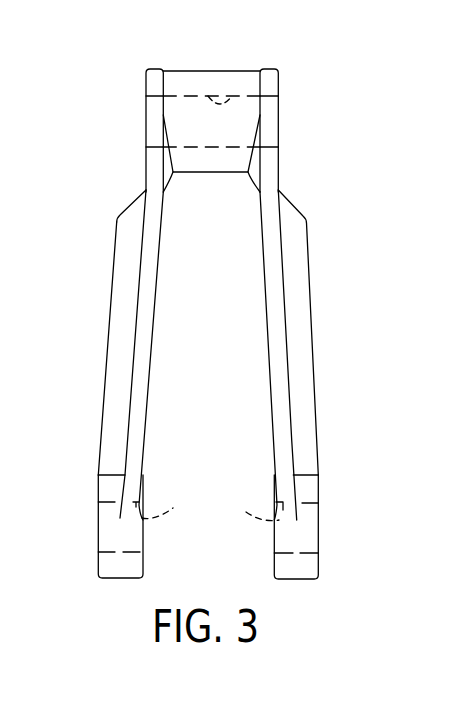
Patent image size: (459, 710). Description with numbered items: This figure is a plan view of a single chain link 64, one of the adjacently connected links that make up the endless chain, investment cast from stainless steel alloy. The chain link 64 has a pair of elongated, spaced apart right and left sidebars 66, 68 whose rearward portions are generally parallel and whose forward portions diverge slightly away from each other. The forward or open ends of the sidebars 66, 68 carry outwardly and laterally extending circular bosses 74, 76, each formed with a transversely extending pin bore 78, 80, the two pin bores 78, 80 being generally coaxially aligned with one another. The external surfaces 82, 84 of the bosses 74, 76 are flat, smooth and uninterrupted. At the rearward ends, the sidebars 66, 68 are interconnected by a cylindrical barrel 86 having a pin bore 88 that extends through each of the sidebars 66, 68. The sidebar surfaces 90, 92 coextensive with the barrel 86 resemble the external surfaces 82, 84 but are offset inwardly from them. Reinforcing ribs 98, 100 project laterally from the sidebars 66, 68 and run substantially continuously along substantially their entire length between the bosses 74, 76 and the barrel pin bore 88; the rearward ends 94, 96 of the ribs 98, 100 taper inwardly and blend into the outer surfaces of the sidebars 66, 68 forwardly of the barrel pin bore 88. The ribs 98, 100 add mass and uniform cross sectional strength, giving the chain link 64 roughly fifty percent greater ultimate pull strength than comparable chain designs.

The chain link 64 is at (345, 387).
The right sidebar 66 is at (278, 305).
The left sidebar 68 is at (142, 305).
The circular boss 74 is at (310, 493).
The circular boss 76 is at (105, 493).
The pin bore 78 is at (249, 504).
The pin bore 80 is at (171, 503).
The external surface 82 is at (310, 568).
The external surface 84 is at (105, 567).
The cylindrical barrel 86 is at (185, 82).
The pin bore 88 is at (232, 96).
The sidebar surface 90 is at (278, 88).
The sidebar surface 92 is at (146, 88).
The rearward end of rib 94 is at (290, 218).
The rearward end of rib 96 is at (132, 222).
The reinforcing rib 98 is at (302, 332).
The reinforcing rib 100 is at (117, 330).